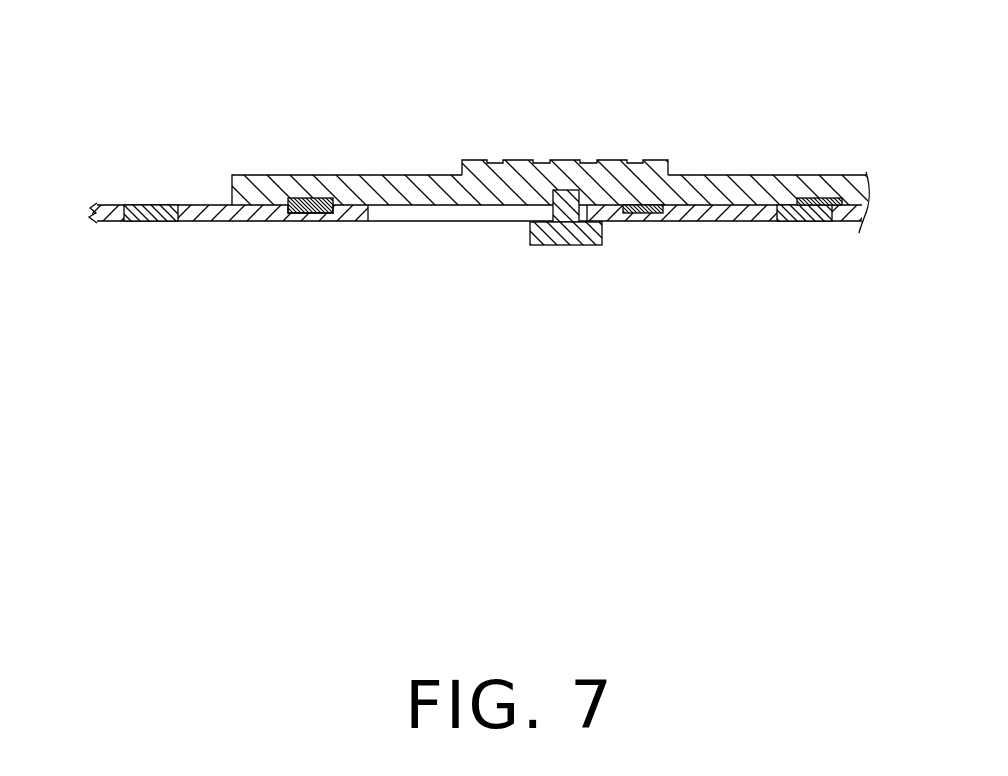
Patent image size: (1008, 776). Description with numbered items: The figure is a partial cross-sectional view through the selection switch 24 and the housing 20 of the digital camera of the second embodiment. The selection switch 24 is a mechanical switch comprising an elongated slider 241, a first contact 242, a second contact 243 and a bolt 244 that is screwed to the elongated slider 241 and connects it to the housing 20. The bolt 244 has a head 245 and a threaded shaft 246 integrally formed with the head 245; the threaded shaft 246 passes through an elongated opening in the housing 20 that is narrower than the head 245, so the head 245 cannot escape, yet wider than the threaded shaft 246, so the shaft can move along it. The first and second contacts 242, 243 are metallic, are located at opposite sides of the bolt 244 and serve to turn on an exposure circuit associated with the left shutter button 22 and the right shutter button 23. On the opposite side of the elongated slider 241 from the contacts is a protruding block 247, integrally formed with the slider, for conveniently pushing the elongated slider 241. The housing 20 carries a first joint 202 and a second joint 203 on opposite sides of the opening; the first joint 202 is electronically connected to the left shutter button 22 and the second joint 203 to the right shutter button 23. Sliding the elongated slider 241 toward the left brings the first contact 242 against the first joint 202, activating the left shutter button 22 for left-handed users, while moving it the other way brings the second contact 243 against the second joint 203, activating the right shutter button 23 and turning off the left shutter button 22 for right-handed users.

The housing 20 is at (107, 212).
The left shutter button 22 is at (155, 208).
The right shutter button 23 is at (810, 221).
The selection switch 24 is at (877, 90).
The elongated slider 241 is at (265, 183).
The first contact 242 is at (318, 197).
The second contact 243 is at (820, 198).
The bolt 244 is at (541, 284).
The head 245 is at (605, 317).
The threaded shaft 246 is at (578, 241).
The protruding block 247 is at (592, 182).
The first joint 202 is at (309, 213).
The second joint 203 is at (658, 212).